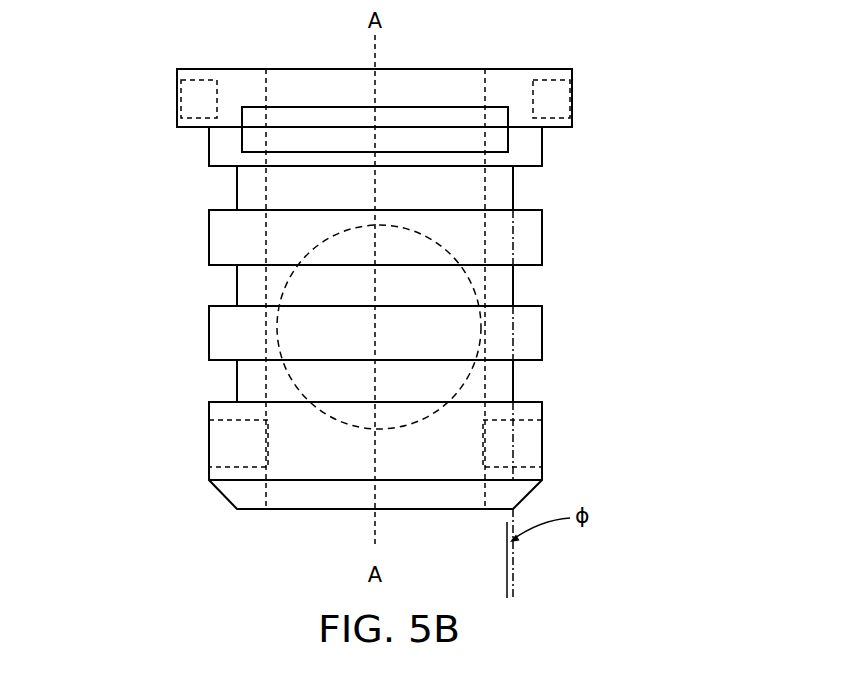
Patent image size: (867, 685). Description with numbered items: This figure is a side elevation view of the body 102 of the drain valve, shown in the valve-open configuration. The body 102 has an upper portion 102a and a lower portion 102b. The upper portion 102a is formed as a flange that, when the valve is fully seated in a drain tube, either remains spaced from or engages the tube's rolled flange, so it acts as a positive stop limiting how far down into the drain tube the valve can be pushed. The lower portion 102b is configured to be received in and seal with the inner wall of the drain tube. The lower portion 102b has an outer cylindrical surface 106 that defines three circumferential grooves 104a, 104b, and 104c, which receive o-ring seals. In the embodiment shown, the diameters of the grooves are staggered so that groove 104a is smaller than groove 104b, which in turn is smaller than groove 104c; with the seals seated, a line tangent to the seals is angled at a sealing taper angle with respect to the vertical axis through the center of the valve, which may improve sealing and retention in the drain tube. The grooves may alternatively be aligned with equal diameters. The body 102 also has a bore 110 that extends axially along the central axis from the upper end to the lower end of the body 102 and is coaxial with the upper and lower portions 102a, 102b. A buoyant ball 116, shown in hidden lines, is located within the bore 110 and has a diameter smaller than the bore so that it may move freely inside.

The body 102 is at (402, 307).
The upper portion 102a is at (160, 70).
The lower portion 102b is at (160, 147).
The circumferential groove 104a is at (522, 188).
The circumferential groove 104b is at (522, 287).
The circumferential groove 104c is at (522, 385).
The outer cylindrical surface 106 is at (544, 233).
The bore 110 is at (452, 88).
The buoyant ball 116 is at (352, 427).